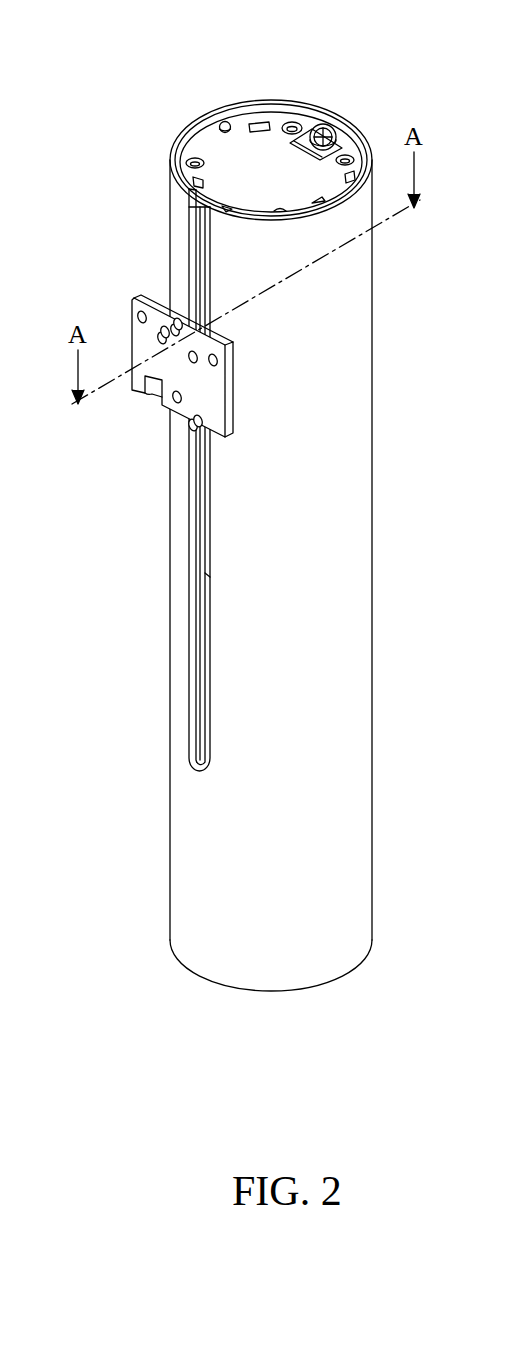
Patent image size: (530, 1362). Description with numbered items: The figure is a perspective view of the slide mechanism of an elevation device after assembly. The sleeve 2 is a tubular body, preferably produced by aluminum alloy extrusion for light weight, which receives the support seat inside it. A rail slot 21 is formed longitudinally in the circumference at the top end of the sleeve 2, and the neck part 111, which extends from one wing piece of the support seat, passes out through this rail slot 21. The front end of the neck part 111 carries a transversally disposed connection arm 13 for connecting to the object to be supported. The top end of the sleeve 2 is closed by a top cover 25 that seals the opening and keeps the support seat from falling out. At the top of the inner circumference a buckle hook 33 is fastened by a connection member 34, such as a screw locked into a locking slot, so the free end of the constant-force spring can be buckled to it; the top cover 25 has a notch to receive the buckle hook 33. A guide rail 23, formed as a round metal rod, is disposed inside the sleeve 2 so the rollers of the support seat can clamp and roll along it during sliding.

The sleeve 2 is at (289, 582).
The connection arm 13 is at (195, 403).
The rail slot 21 is at (200, 222).
The guide rail 23 is at (224, 123).
The top cover 25 is at (228, 155).
The buckle hook 33 is at (340, 142).
The connection member 34 is at (325, 127).
The neck part 111 is at (189, 292).